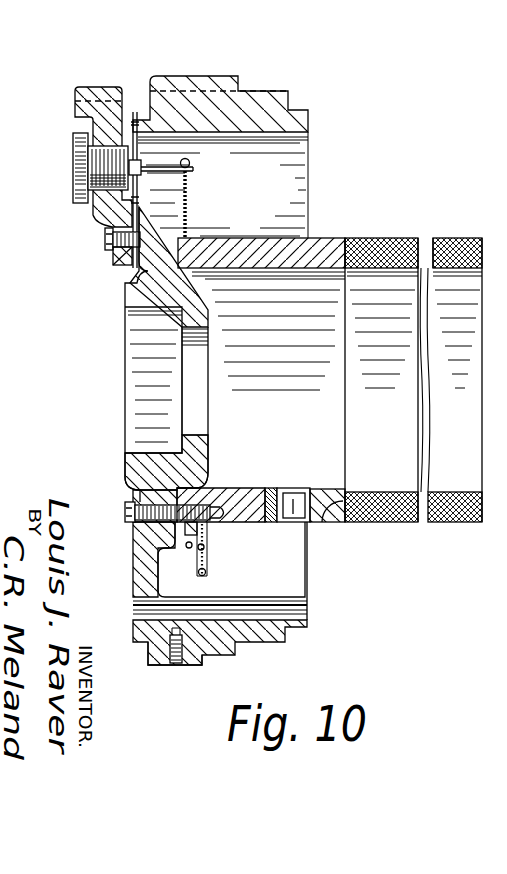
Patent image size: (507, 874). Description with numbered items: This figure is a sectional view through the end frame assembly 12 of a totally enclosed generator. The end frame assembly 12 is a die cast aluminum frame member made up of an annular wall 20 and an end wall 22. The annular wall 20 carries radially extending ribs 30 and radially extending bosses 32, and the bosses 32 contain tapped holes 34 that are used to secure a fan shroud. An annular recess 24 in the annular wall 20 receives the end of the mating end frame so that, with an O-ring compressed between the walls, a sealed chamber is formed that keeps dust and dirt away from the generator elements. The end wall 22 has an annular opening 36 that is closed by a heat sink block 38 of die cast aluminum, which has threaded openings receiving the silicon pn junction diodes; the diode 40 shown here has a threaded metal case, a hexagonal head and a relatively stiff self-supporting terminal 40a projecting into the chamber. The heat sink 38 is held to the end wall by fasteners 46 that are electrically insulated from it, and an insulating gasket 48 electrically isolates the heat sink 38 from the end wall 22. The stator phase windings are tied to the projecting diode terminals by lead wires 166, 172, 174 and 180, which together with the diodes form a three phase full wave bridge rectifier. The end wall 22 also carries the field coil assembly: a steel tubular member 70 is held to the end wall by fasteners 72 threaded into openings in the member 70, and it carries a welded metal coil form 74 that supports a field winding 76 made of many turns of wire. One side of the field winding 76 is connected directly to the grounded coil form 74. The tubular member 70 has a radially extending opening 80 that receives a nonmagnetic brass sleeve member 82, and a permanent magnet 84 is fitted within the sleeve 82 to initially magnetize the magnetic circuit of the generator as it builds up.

The end frame assembly 12 is at (250, 78).
The annular wall 20 is at (220, 78).
The radially extending ribs 30 is at (182, 78).
The heat sink block 38 is at (76, 109).
The diode 40 is at (73, 160).
The terminal 40a is at (196, 169).
The annular opening 36 is at (138, 198).
The lead wire 166 is at (190, 217).
The fasteners 46 is at (105, 236).
The insulating gasket 48 is at (113, 262).
The tubular member 70 is at (325, 240).
The fasteners 72 is at (124, 497).
The sleeve member 82 is at (267, 490).
The permanent magnet 84 is at (284, 488).
The metal coil form 74 is at (360, 490).
The radially extending opening 80 is at (333, 505).
The field winding 76 is at (396, 522).
The lead wire 174 is at (203, 531).
The lead wire 172 is at (227, 560).
The lead wire 180 is at (208, 568).
The end wall 22 is at (235, 464).
The annular recess 24 is at (297, 626).
The radially extending bosses 32 is at (160, 653).
The tapped holes 34 is at (177, 664).